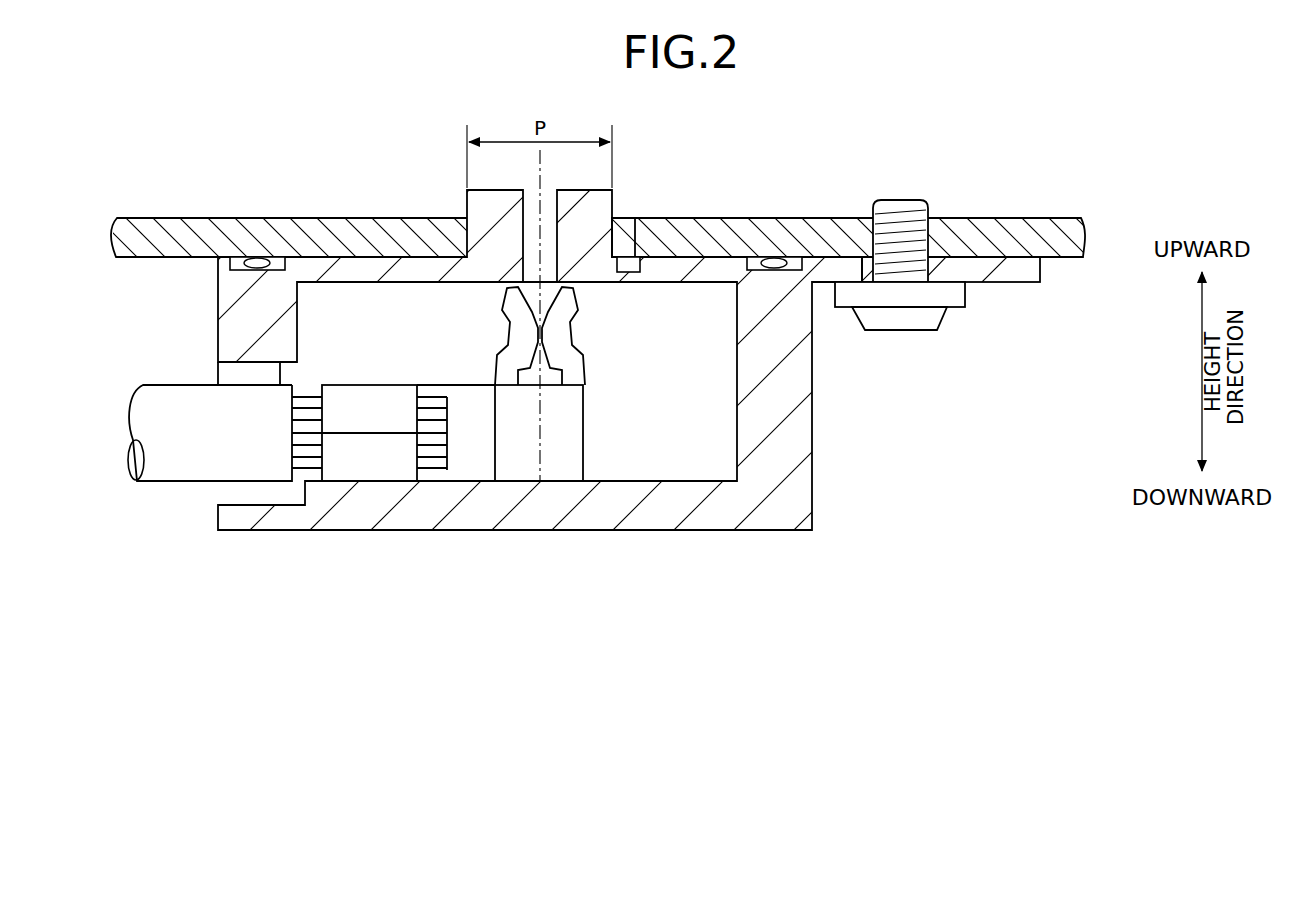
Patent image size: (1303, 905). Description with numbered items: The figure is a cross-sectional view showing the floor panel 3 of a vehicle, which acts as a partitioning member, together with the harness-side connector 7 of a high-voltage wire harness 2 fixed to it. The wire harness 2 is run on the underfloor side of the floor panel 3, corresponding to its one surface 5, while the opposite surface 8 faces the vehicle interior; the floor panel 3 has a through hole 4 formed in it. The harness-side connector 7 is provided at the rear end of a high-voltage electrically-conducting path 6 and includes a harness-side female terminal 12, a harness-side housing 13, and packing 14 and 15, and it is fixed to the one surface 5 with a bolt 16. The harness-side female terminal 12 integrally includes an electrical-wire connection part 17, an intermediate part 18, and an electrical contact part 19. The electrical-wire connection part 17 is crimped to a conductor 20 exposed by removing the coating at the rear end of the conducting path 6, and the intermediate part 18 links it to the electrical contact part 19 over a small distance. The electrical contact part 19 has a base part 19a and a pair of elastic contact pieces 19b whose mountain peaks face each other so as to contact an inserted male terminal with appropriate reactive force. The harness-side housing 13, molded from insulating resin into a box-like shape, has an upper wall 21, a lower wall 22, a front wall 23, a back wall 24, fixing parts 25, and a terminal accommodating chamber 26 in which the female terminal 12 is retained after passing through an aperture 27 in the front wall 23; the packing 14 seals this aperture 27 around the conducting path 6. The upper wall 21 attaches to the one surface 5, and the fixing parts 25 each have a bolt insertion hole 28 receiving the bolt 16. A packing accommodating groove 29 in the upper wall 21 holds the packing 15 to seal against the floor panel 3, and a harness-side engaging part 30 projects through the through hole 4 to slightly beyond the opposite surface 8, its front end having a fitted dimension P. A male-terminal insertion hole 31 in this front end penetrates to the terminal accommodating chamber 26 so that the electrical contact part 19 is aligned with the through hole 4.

The wire harness 2 is at (141, 382).
The floor panel 3 is at (1085, 236).
The through hole 4 is at (620, 270).
The one surface 5 is at (1058, 259).
The high-voltage electrically-conducting path 6 is at (143, 418).
The harness-side connector 7 is at (817, 443).
The opposite surface 8 is at (1032, 218).
The harness-side female terminal 12 is at (543, 600).
The harness-side housing 13 is at (600, 534).
The packing 14 is at (230, 495).
The packing 15 is at (773, 264).
The bolt 16 is at (922, 318).
The electrical-wire connection part 17 is at (397, 460).
The intermediate part 18 is at (480, 462).
The electrical contact part 19 is at (582, 375).
The base part 19a is at (565, 442).
The elastic contact piece 19b is at (562, 350).
The conductor 20 is at (305, 450).
The upper wall 21 is at (373, 283).
The lower wall 22 is at (675, 517).
The front wall 23 is at (218, 312).
The back wall 24 is at (800, 395).
The fixing part 25 is at (1017, 272).
The terminal accommodating chamber 26 is at (700, 462).
The aperture 27 is at (250, 493).
The bolt insertion hole 28 is at (921, 272).
The packing accommodating groove 29 is at (788, 250).
The harness-side engaging part 30 is at (603, 213).
The male-terminal insertion hole 31 is at (553, 285).